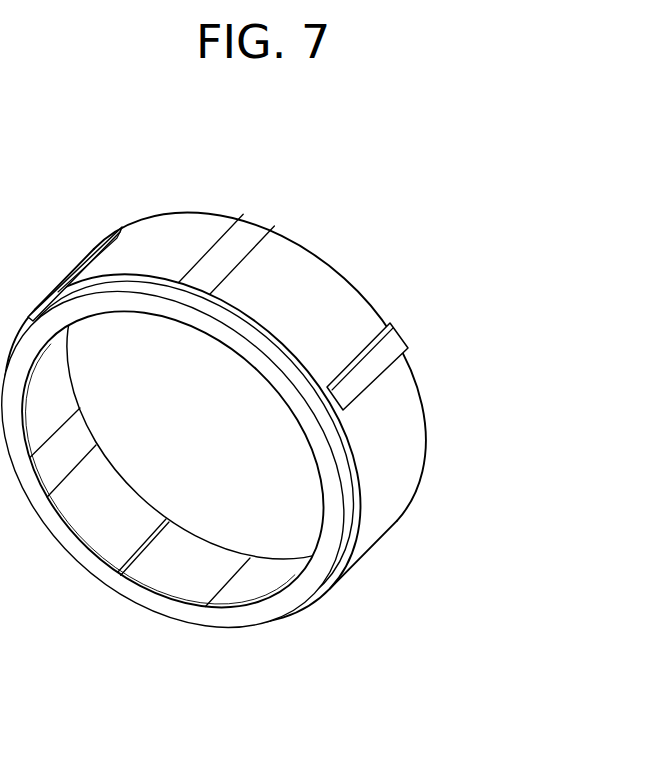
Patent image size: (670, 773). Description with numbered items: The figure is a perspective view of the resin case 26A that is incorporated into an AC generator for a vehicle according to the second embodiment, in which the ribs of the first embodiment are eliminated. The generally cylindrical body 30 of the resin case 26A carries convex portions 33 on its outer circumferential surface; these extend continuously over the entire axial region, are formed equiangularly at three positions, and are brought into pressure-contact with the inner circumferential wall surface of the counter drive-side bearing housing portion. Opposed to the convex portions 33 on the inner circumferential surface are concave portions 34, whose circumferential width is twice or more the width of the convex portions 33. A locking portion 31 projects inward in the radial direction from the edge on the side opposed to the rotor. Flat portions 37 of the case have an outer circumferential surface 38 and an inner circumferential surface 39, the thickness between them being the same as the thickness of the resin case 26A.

The resin case 26A is at (478, 253).
The cylindrical body portion 30 is at (310, 293).
The locking portion 31 is at (182, 627).
The convex portion 33 is at (90, 256).
The concave portion 34 is at (193, 562).
The flat portion 37 is at (256, 233).
The outer circumferential surface 38 is at (236, 257).
The inner circumferential surface 39 is at (80, 433).